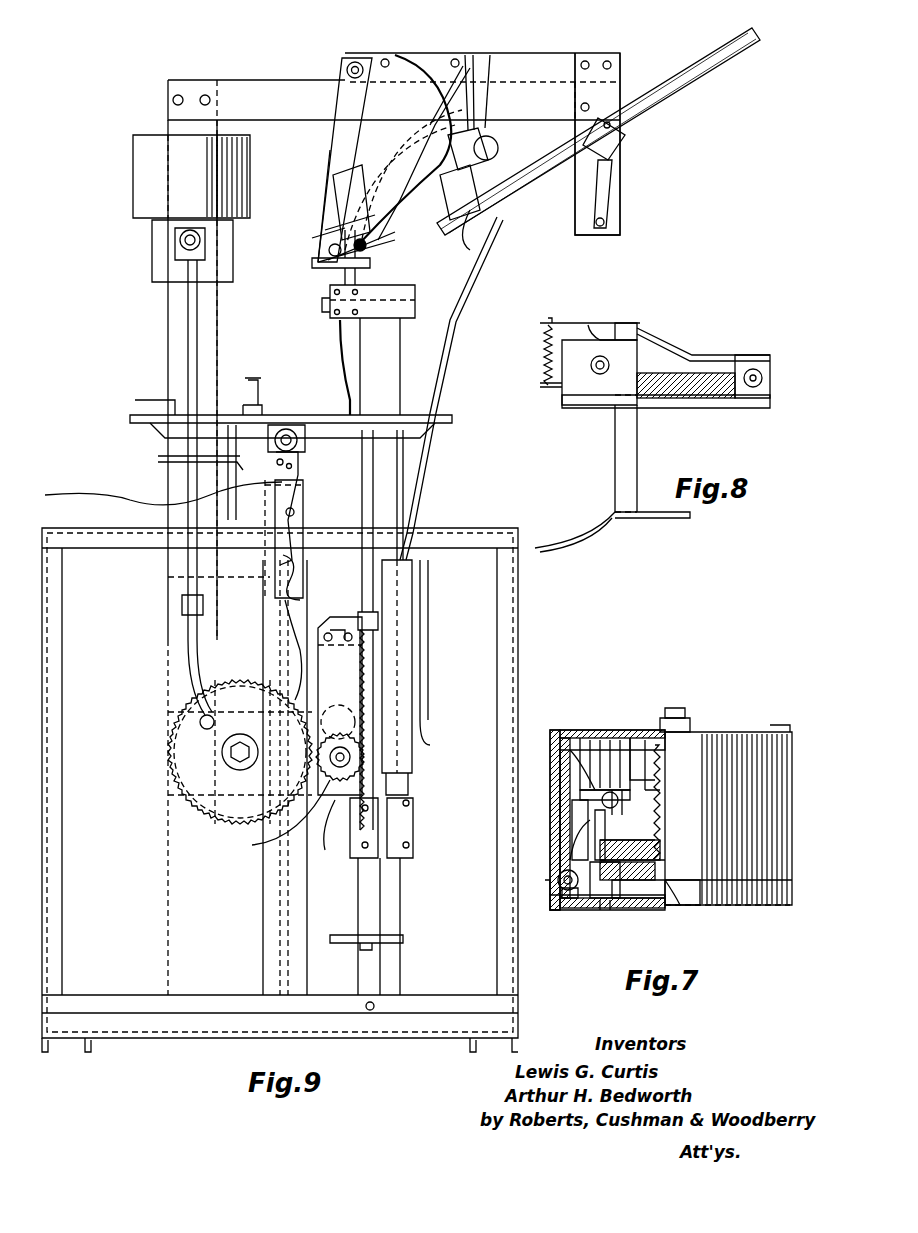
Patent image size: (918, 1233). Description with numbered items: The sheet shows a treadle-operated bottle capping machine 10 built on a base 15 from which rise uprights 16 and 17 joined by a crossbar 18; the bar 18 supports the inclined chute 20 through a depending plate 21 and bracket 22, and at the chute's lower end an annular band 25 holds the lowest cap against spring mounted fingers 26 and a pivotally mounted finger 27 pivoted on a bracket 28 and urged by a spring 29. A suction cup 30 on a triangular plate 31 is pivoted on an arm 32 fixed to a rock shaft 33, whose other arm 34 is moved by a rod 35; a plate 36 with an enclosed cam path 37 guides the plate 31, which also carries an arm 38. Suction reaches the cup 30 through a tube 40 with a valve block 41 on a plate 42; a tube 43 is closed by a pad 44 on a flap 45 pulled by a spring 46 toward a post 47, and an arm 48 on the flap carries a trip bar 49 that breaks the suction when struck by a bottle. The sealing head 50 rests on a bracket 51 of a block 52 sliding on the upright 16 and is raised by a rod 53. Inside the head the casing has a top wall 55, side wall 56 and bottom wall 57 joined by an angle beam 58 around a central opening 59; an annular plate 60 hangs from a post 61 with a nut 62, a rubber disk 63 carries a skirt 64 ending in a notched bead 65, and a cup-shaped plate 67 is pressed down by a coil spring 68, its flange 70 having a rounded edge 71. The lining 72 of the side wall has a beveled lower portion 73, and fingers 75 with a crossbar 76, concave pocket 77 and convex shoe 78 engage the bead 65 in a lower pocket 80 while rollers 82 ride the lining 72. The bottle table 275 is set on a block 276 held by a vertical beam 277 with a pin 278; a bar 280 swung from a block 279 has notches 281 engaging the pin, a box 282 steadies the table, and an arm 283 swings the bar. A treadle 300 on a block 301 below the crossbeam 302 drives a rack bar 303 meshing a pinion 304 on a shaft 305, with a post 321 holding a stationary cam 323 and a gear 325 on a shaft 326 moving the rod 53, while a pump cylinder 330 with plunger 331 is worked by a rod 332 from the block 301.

In FIG. 9, the machine 10 is at (468, 518).
In FIG. 9, the base 15 is at (100, 528).
In FIG. 9, the upright 16 is at (170, 302).
In FIG. 9, the upright 17 is at (372, 335).
In FIG. 8, the upright 17 is at (690, 380).
In FIG. 9, the crossbar 18 is at (394, 144).
In FIG. 9, the chute 20 is at (648, 118).
In FIG. 9, the depending plate 21 is at (576, 213).
In FIG. 9, the bracket 22 is at (612, 182).
In FIG. 9, the annular band 25 is at (459, 190).
In FIG. 9, the spring mounted fingers 26 is at (465, 240).
In FIG. 9, the pivotally mounted finger 27 is at (474, 76).
In FIG. 9, the bracket 28 is at (478, 85).
In FIG. 9, the spring 29 is at (499, 81).
In FIG. 9, the suction cup 30 is at (312, 245).
In FIG. 9, the triangular plate 31 is at (320, 262).
In FIG. 9, the arm 32 is at (335, 142).
In FIG. 9, the rock shaft 33 is at (355, 62).
In FIG. 9, the arm 34 is at (565, 103).
In FIG. 9, the rod or actuator 35 is at (452, 312).
In FIG. 9, the plate 36 is at (411, 180).
In FIG. 9, the cam path 37 is at (400, 187).
In FIG. 9, the arm 38 is at (300, 240).
In FIG. 9, the tube 40 is at (340, 345).
In FIG. 8, the tube 40 is at (608, 358).
In FIG. 8, the valve block 41 is at (578, 388).
In FIG. 9, the plate 42 is at (395, 306).
In FIG. 8, the plate 42 is at (690, 405).
In FIG. 8, the tube 43 is at (575, 322).
In FIG. 8, the pad 44 is at (598, 325).
In FIG. 8, the flap 45 is at (665, 346).
In FIG. 8, the spring 46 is at (546, 352).
In FIG. 8, the post 47 is at (538, 383).
In FIG. 8, the arm 48 is at (630, 470).
In FIG. 9, the trip bar 49 is at (372, 262).
In FIG. 8, the trip bar 49 is at (578, 540).
In FIG. 9, the head 50 is at (145, 178).
In FIG. 7, the head 50 is at (718, 748).
In FIG. 9, the bracket 51 is at (172, 232).
In FIG. 9, the block 52 is at (158, 268).
In FIG. 9, the rod 53 is at (186, 322).
In FIG. 7, the top wall 55 is at (598, 738).
In FIG. 7, the side wall 56 is at (572, 808).
In FIG. 7, the bottom wall 57 is at (565, 910).
In FIG. 7, the angle beam 58 is at (556, 905).
In FIG. 7, the central opening 59 is at (640, 910).
In FIG. 7, the annular plate 60 is at (660, 850).
In FIG. 7, the post 61 is at (675, 718).
In FIG. 7, the nut 62 is at (688, 716).
In FIG. 7, the annular disk 63 is at (620, 910).
In FIG. 7, the skirt 64 is at (557, 876).
In FIG. 7, the annular bead 65 is at (668, 905).
In FIG. 7, the cup-shaped plate 67 is at (660, 818).
In FIG. 7, the expansion coil spring 68 is at (652, 740).
In FIG. 7, the flange 70 is at (636, 738).
In FIG. 7, the outer edge 71 is at (610, 790).
In FIG. 7, the lining 72 is at (548, 742).
In FIG. 7, the lower portion 73 is at (568, 850).
In FIG. 7, the fingers 75 is at (595, 830).
In FIG. 7, the crossbar 76 is at (590, 790).
In FIG. 7, the concave pocket 77 is at (578, 750).
In FIG. 7, the convex shoe 78 is at (560, 785).
In FIG. 7, the concave pocket 80 is at (600, 910).
In FIG. 7, the roller 82 is at (556, 920).
In FIG. 9, the table 275 is at (238, 410).
In FIG. 9, the block 276 is at (298, 515).
In FIG. 9, the vertical beam 277 is at (302, 612).
In FIG. 9, the pin 278 is at (300, 490).
In FIG. 9, the block 279 is at (275, 425).
In FIG. 9, the bar 280 is at (151, 493).
In FIG. 9, the notches 281 is at (313, 576).
In FIG. 9, the box 282 is at (150, 490).
In FIG. 9, the arm 283 is at (156, 455).
In FIG. 9, the treadle 300 is at (365, 938).
In FIG. 9, the block 301 is at (405, 820).
In FIG. 9, the crossbeam 302 is at (340, 830).
In FIG. 9, the rack bar 303 is at (372, 685).
In FIG. 9, the pinion 304 is at (271, 823).
In FIG. 9, the shaft 305 is at (330, 758).
In FIG. 9, the post 321 is at (340, 665).
In FIG. 9, the stationary cam 323 is at (372, 625).
In FIG. 9, the gear 325 is at (172, 745).
In FIG. 9, the shaft 326 is at (225, 755).
In FIG. 9, the cylinder 330 is at (412, 696).
In FIG. 9, the plunger 331 is at (400, 500).
In FIG. 9, the rod 332 is at (372, 475).